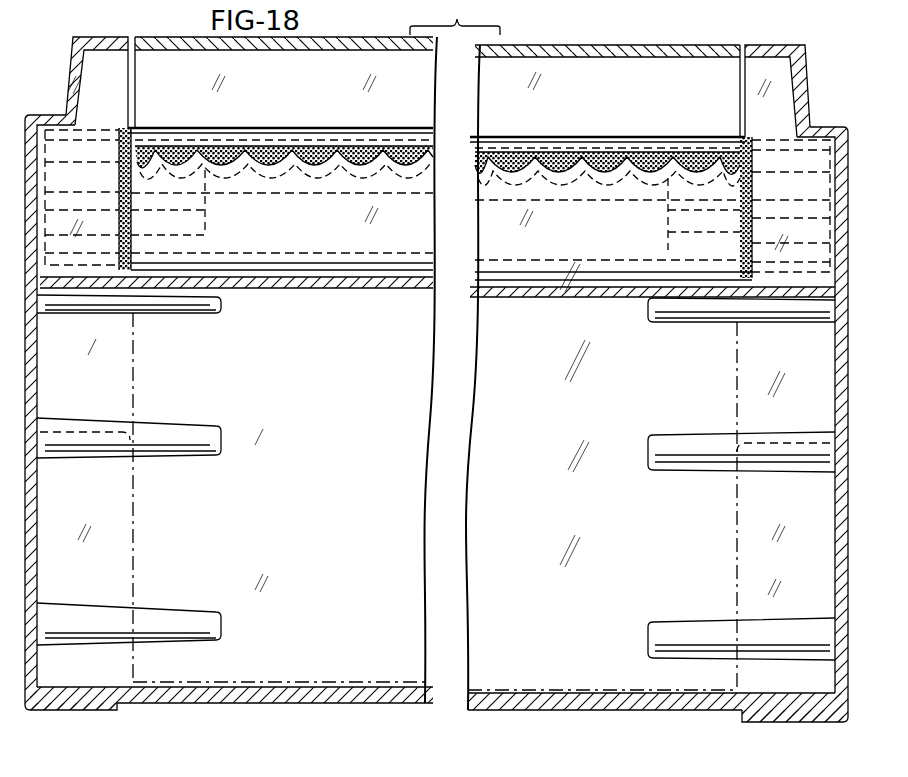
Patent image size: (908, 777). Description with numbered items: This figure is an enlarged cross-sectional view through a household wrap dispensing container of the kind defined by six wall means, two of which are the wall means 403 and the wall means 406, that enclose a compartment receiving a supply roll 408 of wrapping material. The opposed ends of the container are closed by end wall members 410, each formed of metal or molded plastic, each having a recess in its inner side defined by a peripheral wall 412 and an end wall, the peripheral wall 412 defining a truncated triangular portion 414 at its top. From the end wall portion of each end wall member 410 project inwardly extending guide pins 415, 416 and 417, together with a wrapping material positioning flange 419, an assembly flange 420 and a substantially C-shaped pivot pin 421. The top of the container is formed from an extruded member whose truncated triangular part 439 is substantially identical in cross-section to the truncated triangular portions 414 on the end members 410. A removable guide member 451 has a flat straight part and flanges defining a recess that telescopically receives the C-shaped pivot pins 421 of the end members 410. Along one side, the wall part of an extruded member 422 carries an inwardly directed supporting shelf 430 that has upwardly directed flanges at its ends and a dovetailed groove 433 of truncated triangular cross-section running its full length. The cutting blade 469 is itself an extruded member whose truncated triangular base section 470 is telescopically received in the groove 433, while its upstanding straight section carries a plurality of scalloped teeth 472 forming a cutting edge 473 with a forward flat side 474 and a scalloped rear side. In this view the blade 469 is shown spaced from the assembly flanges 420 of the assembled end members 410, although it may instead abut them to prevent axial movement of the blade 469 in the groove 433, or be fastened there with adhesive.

The wall means 403 is at (367, 660).
The wall means 406 is at (478, 708).
The supply roll 408 is at (325, 683).
The end wall member 410 is at (17, 710).
The peripheral wall 412 is at (98, 710).
The truncated triangular portion 414 is at (80, 37).
The guide pin 415 is at (163, 307).
The guide pin 416 is at (182, 450).
The guide pin 417 is at (157, 614).
The wrapping material positioning flange 419 is at (115, 550).
The assembly flange 420 is at (60, 170).
The C-shaped pivot pin 421 is at (210, 220).
The extruded member 422 is at (218, 708).
The supporting shelf 430 is at (413, 290).
The dovetailed groove 433 is at (257, 276).
The truncated triangular part 439 is at (560, 45).
The removable guide member 451 is at (495, 138).
The cutting blade 469 is at (398, 232).
The base section 470 is at (492, 278).
The scalloped teeth 472 is at (247, 150).
The cutting edge 473 is at (352, 165).
The forward flat side 474 is at (552, 240).